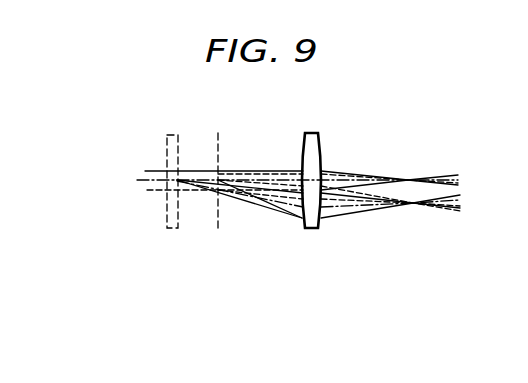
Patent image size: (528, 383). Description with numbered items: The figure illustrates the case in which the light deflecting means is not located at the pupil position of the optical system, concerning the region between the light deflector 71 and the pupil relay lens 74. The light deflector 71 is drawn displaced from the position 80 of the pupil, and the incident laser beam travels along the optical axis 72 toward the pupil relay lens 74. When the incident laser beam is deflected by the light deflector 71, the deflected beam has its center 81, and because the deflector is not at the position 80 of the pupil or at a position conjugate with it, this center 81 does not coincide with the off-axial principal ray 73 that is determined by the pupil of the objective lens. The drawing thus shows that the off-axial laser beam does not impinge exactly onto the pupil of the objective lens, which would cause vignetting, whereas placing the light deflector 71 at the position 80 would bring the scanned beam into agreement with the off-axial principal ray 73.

The light deflector 71 is at (168, 229).
The optical axis 72 is at (273, 175).
The off-axial principal ray 73 is at (268, 197).
The pupil relay lens 74 is at (315, 229).
The position of the pupil 80 is at (217, 214).
The center of the laser beam 81 is at (250, 206).